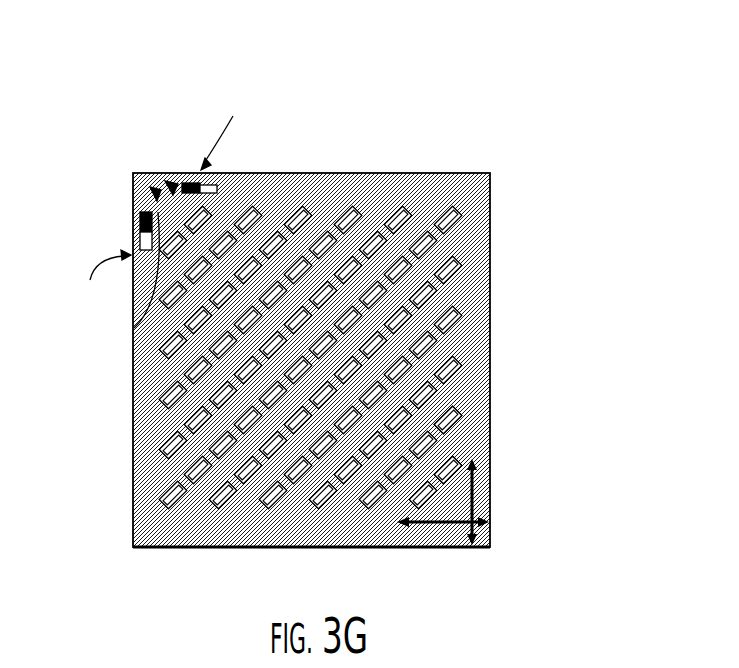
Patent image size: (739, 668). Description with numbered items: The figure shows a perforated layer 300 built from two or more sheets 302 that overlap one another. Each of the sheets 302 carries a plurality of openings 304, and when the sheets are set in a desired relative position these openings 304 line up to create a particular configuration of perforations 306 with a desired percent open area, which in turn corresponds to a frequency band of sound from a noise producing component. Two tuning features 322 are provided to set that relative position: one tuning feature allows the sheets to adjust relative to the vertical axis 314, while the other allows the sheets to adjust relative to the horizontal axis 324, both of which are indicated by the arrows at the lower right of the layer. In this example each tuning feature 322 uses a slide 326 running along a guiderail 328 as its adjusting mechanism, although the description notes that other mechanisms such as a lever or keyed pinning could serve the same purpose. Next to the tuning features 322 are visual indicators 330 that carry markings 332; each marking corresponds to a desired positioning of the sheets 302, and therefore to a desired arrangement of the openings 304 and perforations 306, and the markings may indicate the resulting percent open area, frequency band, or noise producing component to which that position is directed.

The perforated layer 300 is at (321, 342).
The sheets 302 is at (478, 278).
The openings 304 is at (452, 456).
The perforations 306 is at (200, 384).
The vertical axis 314 is at (480, 500).
The tuning features 322 is at (170, 206).
The horizontal axis 324 is at (440, 548).
The slide 326 is at (192, 174).
The guiderail 328 is at (215, 184).
The visual indicators 330 is at (169, 185).
The markings 332 is at (134, 328).